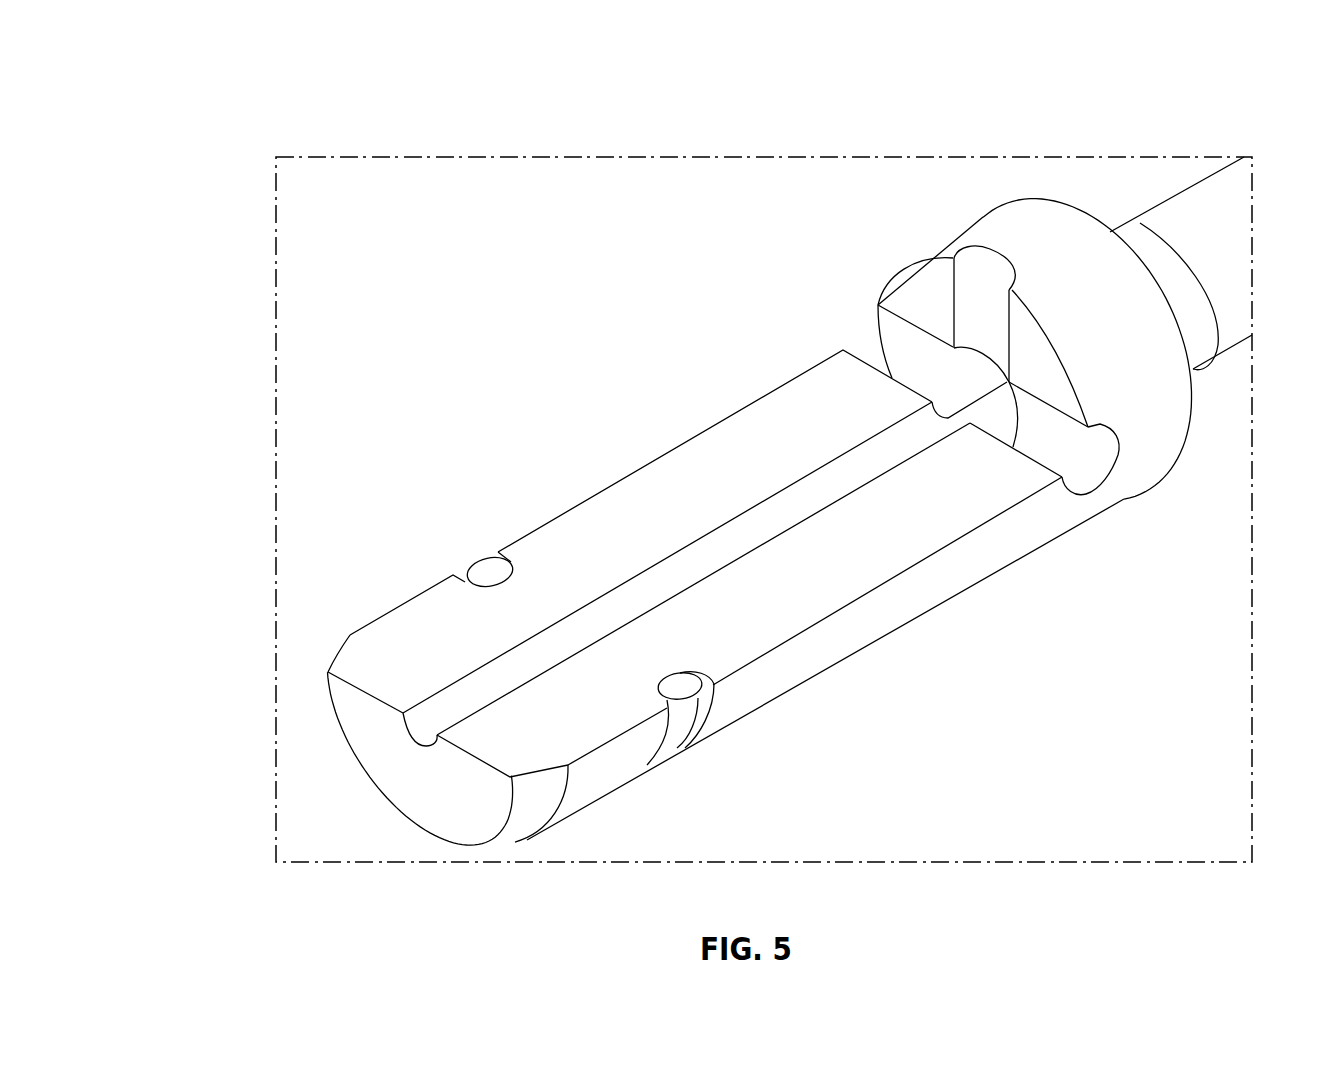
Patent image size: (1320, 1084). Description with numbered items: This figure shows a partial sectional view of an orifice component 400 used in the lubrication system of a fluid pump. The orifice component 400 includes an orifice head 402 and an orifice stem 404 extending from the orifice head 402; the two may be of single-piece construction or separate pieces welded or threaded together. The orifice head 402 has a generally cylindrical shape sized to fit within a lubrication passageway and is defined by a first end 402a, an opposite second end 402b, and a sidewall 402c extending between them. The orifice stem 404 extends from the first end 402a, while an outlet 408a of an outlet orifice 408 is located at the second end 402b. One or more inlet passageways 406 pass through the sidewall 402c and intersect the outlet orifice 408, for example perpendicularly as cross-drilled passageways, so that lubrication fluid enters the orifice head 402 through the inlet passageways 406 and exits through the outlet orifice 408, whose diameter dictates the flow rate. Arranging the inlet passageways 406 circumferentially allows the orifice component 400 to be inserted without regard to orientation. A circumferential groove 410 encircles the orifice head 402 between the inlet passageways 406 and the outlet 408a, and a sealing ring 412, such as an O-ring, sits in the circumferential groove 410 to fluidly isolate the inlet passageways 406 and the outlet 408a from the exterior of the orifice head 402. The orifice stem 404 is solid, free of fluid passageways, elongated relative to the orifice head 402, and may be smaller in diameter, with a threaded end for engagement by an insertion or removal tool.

The orifice component 400 is at (255, 65).
The orifice head 402 is at (577, 466).
The first end 402a is at (1190, 385).
The second end 402b is at (367, 755).
The sidewall 402c is at (893, 602).
The orifice stem 404 is at (1203, 215).
The inlet passageway 406 is at (988, 255).
The outlet orifice 408 is at (703, 560).
The outlet 408a is at (430, 743).
The circumferential groove 410 is at (705, 715).
The sealing ring 412 is at (482, 570).